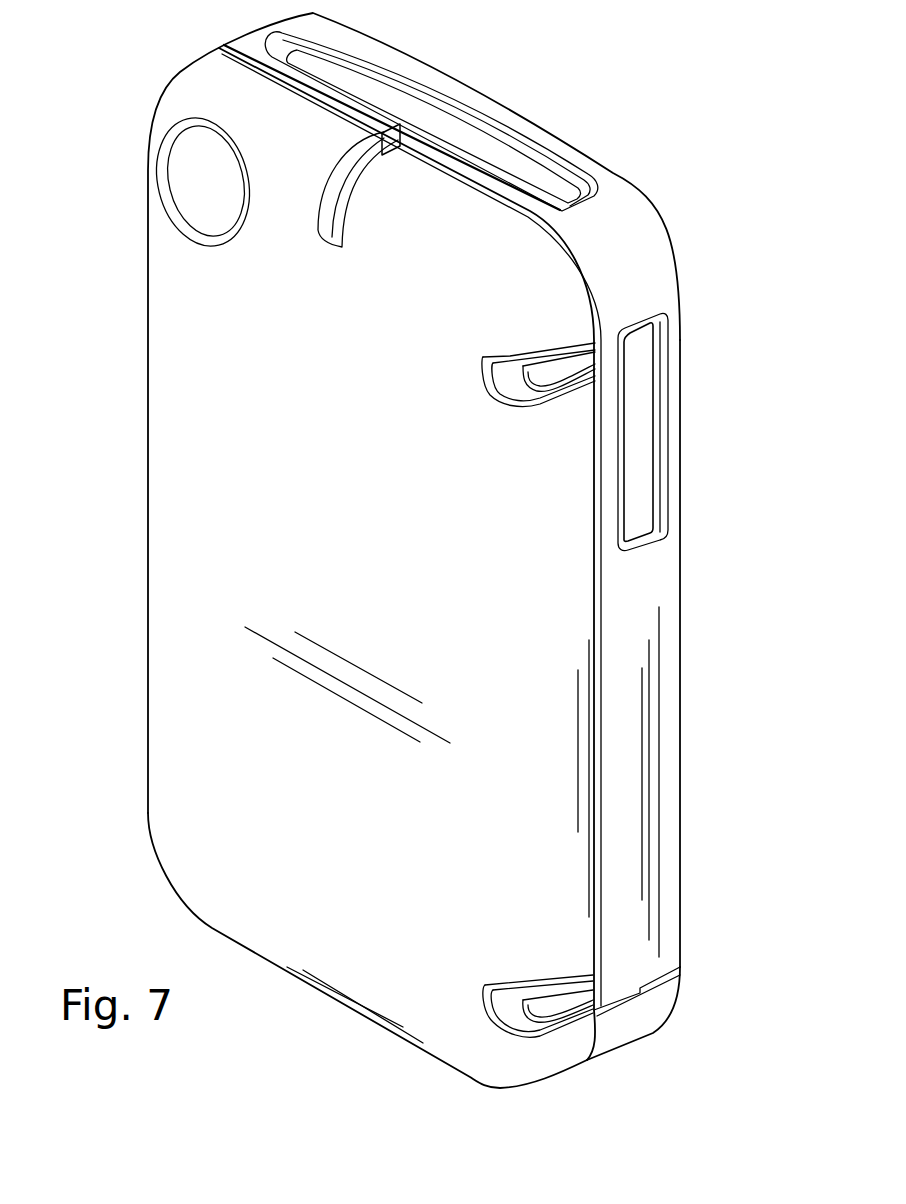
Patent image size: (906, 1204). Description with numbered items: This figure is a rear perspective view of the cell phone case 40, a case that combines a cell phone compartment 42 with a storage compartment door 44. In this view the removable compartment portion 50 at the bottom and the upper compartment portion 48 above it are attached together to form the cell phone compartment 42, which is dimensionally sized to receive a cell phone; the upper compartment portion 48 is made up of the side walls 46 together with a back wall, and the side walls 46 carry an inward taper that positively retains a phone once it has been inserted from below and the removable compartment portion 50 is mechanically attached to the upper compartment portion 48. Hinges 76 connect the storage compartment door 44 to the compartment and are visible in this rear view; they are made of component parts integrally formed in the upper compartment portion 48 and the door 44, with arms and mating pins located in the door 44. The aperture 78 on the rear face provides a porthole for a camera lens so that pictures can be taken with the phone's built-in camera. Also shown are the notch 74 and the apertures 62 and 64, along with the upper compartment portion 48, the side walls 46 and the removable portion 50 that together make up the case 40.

The cell phone case 40 is at (130, 878).
The cell phone compartment 42 is at (700, 797).
The storage compartment door 44 is at (147, 611).
The side walls 46 is at (657, 605).
The upper compartment portion 48 is at (681, 593).
The removable compartment portion 50 is at (665, 1017).
The aperture 62 is at (572, 204).
The aperture 64 is at (655, 318).
The notch 74 is at (347, 207).
The hinges 76 is at (522, 402).
The aperture 78 is at (233, 240).